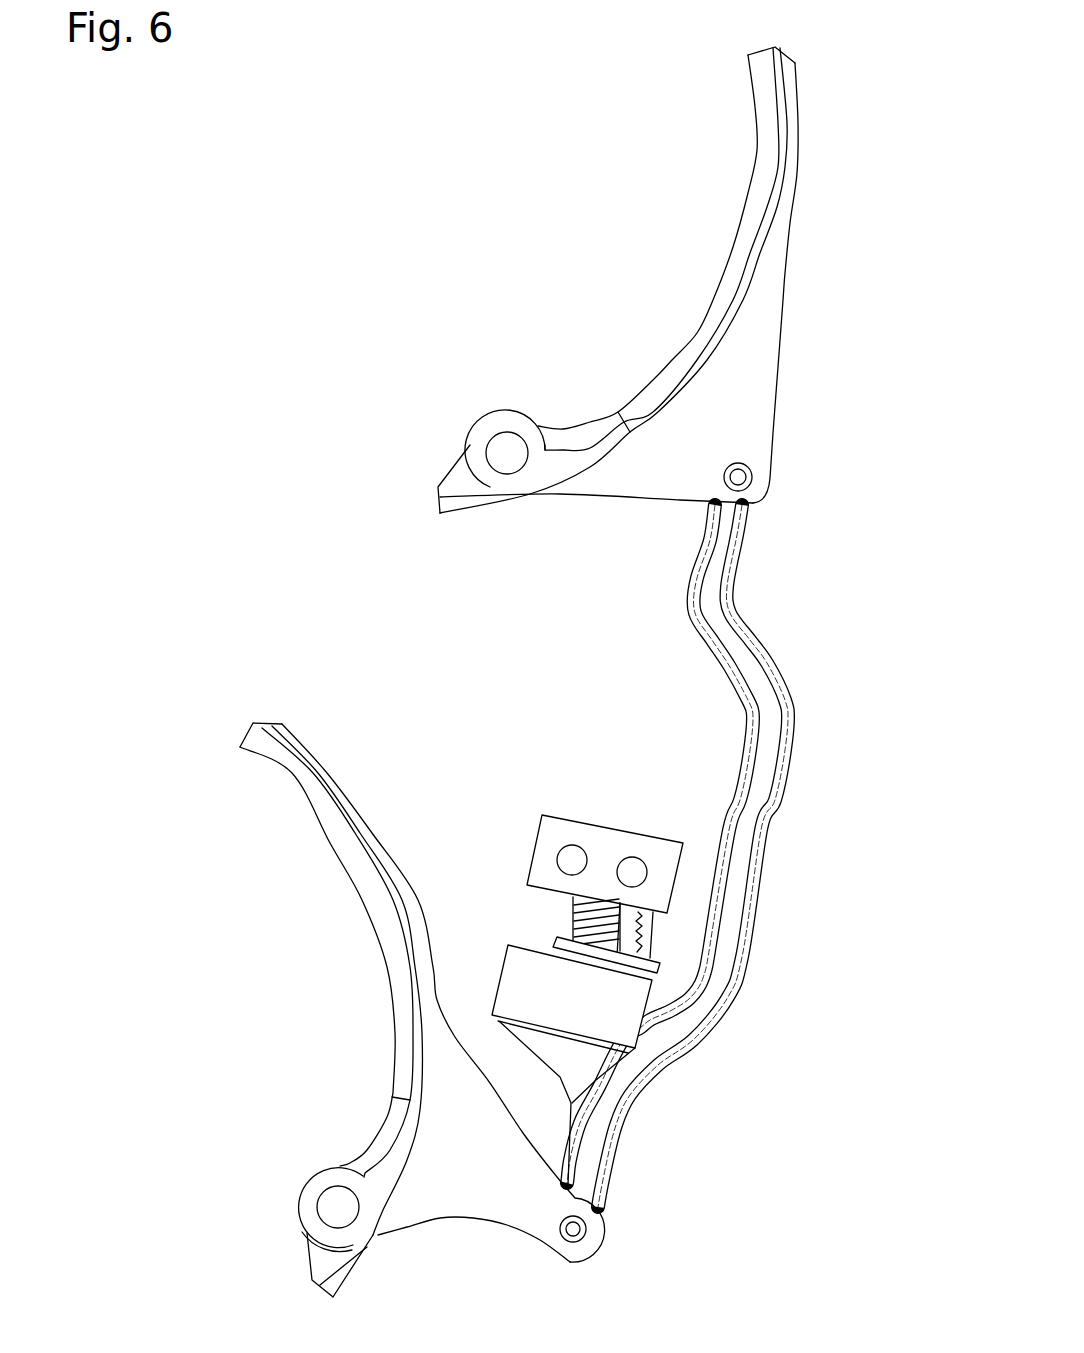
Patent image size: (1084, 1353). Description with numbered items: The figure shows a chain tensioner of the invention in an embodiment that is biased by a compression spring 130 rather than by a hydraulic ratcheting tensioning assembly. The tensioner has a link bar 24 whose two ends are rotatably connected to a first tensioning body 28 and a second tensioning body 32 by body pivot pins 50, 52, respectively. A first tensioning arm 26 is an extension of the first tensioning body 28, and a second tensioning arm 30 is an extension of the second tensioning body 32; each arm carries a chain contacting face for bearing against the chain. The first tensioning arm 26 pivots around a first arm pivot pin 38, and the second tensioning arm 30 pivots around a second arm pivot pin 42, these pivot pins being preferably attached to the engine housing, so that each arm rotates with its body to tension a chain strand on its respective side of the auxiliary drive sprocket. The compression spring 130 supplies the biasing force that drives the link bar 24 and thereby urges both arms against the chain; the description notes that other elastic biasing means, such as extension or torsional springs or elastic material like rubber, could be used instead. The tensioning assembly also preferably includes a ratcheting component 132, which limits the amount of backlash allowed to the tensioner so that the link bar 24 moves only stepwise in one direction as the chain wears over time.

The link bar 24 is at (715, 972).
The first tensioning arm 26 is at (405, 994).
The first tensioning body 28 is at (517, 1188).
The second tensioning arm 30 is at (708, 333).
The second tensioning body 32 is at (755, 393).
The first arm pivot pin 38 is at (340, 1207).
The second arm pivot pin 42 is at (502, 452).
The body pivot pin 50 is at (585, 1233).
The body pivot pin 52 is at (752, 476).
The compression spring 130 is at (568, 930).
The ratcheting component 132 is at (653, 942).